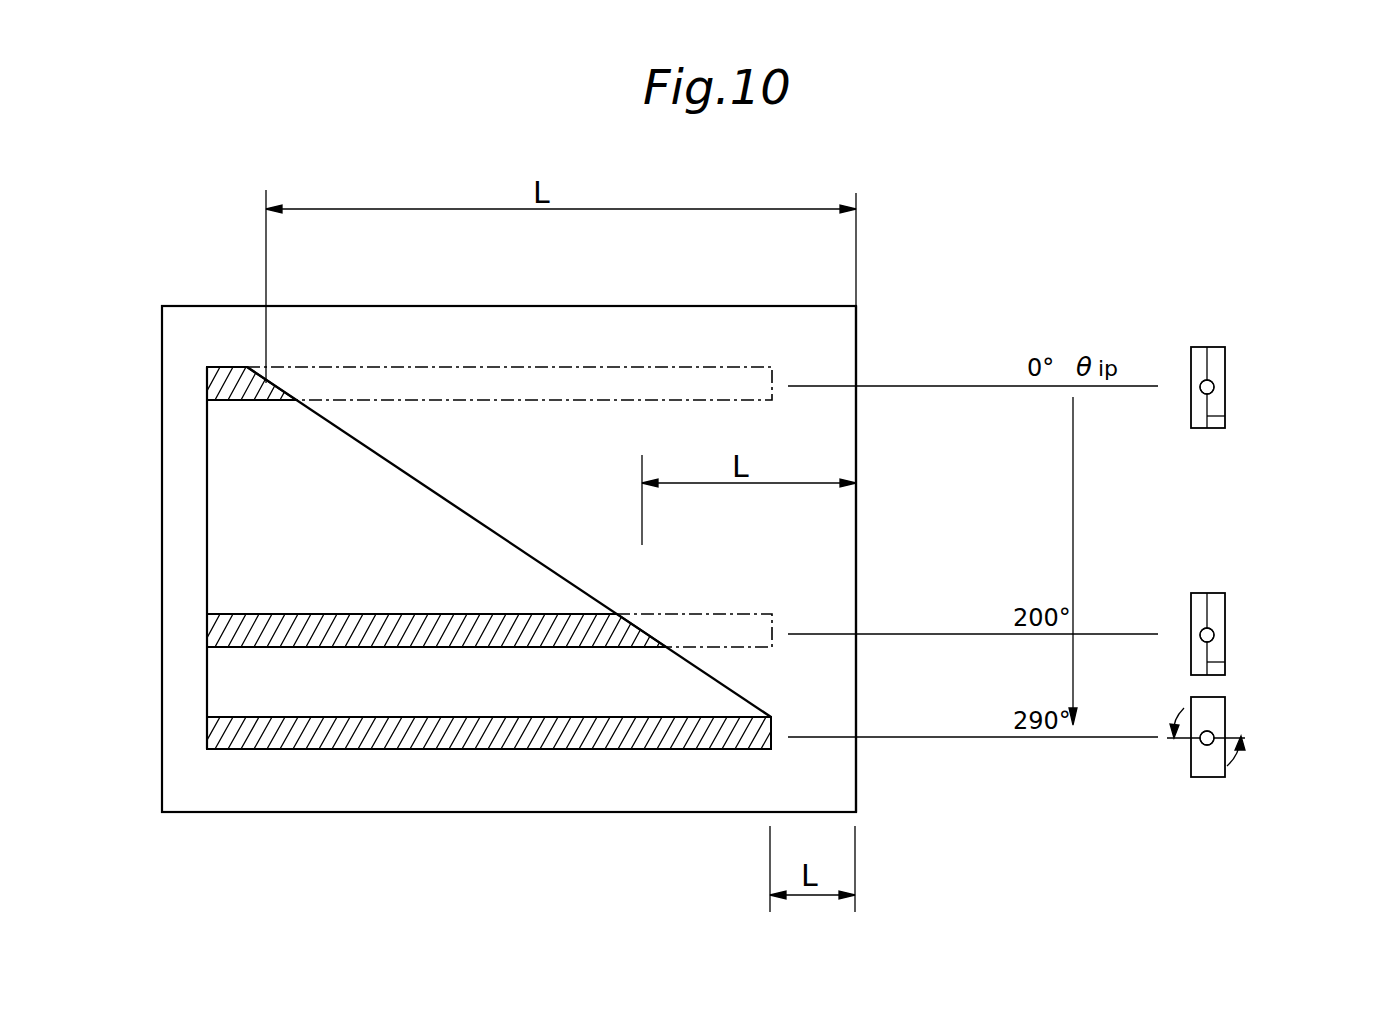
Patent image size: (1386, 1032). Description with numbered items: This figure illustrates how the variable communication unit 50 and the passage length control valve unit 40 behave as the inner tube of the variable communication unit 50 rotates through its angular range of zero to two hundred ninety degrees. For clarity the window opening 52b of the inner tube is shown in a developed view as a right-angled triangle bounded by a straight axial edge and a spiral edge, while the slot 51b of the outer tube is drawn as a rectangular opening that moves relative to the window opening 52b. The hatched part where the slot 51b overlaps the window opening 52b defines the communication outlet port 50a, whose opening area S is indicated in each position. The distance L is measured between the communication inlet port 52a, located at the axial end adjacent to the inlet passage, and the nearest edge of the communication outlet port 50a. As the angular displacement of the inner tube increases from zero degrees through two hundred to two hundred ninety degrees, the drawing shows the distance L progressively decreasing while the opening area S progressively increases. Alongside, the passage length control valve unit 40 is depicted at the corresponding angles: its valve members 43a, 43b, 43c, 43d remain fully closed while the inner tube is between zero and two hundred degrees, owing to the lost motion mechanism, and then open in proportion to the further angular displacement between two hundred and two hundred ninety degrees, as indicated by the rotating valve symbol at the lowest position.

The variable communication unit 50 is at (882, 326).
The communication outlet port 50a is at (222, 367).
The slot 51b is at (483, 367).
The communication inlet port 52a is at (858, 446).
The window opening 52b is at (238, 532).
The passage length control valve unit 40 is at (1266, 336).
The valve member 43a is at (1223, 416).
The valve member 43b is at (1223, 662).
The valve member 43c is at (1237, 728).
The valve member 43d is at (1207, 562).
The opening area S is at (237, 400).